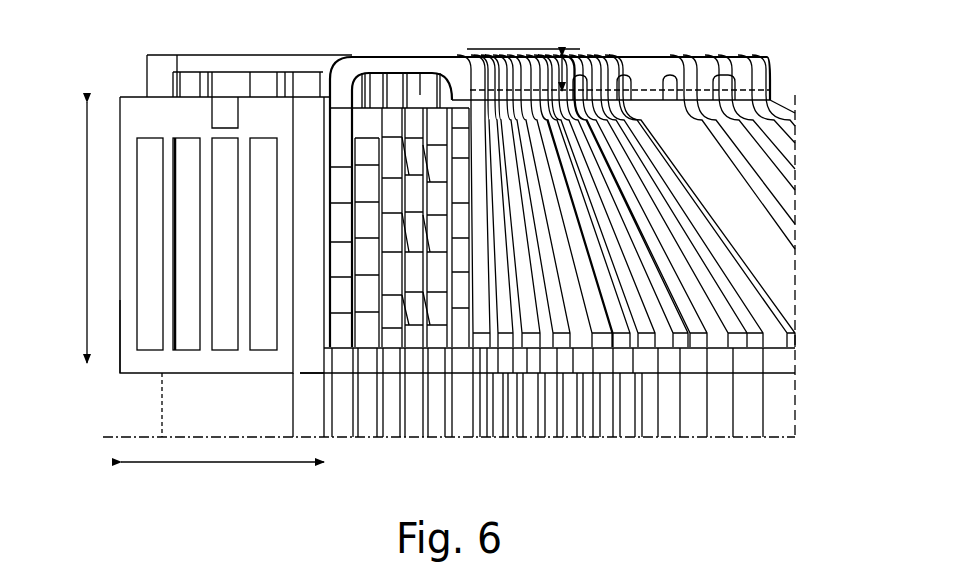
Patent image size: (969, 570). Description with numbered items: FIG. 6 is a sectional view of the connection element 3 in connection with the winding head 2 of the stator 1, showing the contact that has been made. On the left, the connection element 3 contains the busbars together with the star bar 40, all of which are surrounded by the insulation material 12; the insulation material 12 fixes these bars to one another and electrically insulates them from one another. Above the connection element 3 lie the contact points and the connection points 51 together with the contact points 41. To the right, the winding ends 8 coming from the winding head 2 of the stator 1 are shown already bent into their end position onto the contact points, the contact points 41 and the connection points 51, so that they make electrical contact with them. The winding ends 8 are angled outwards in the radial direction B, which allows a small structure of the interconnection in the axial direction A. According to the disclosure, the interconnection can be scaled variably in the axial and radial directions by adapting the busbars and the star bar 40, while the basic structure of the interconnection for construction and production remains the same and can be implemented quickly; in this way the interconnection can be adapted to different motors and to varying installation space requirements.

The stator 1 is at (140, 402).
The winding head 2 is at (797, 187).
The connection element 3 is at (118, 223).
The star bar 40 is at (153, 157).
The contact points 41 is at (163, 78).
The connection points 51 is at (187, 80).
The winding ends 8 is at (352, 60).
The insulation material 12 is at (120, 308).
The axial direction A is at (87, 135).
The radial direction B is at (200, 463).